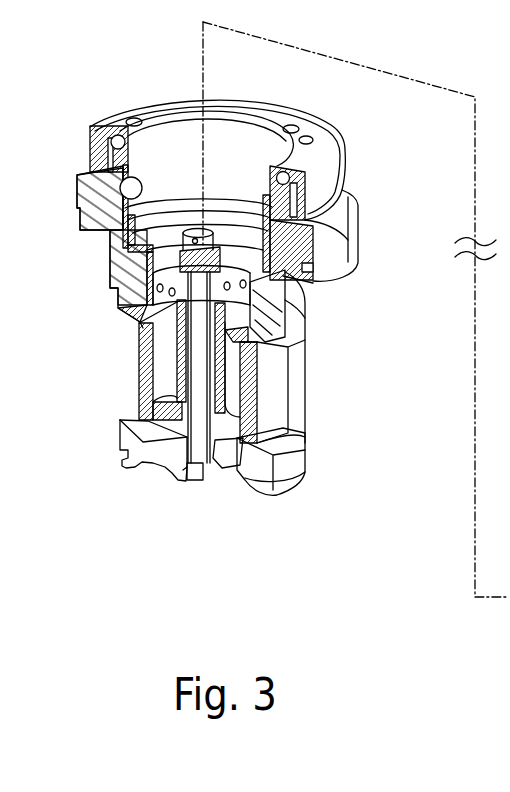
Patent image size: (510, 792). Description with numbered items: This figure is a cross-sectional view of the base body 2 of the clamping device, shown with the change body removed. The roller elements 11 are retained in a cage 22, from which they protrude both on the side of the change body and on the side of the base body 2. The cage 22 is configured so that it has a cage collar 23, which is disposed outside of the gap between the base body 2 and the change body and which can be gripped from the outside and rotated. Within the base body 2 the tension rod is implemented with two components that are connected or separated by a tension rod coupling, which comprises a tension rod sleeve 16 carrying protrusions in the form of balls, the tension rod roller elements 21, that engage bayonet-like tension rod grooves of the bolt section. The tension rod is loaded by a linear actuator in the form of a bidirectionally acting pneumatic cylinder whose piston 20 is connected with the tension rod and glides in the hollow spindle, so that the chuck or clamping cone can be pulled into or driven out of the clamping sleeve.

The base body 2 is at (323, 288).
The roller element 11 is at (128, 190).
The tension rod sleeve 16 is at (196, 231).
The piston 20 is at (234, 447).
The tension rod roller element 21 is at (206, 231).
The cage 22 is at (178, 132).
The cage collar 23 is at (330, 178).